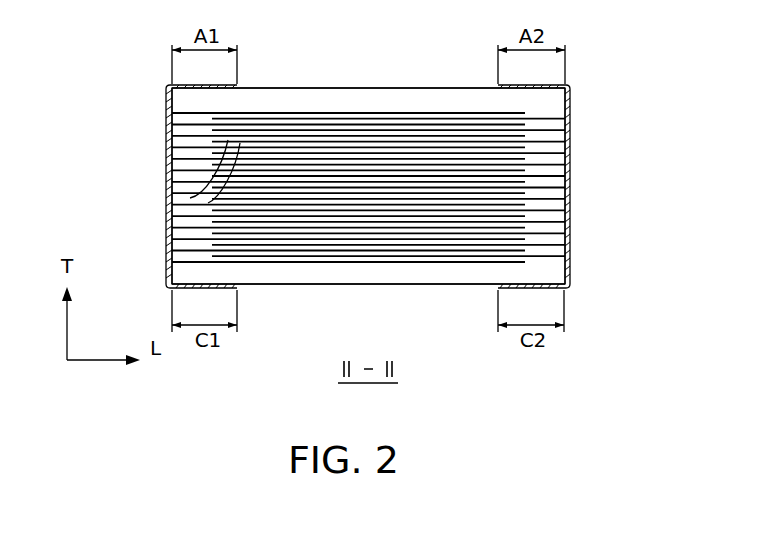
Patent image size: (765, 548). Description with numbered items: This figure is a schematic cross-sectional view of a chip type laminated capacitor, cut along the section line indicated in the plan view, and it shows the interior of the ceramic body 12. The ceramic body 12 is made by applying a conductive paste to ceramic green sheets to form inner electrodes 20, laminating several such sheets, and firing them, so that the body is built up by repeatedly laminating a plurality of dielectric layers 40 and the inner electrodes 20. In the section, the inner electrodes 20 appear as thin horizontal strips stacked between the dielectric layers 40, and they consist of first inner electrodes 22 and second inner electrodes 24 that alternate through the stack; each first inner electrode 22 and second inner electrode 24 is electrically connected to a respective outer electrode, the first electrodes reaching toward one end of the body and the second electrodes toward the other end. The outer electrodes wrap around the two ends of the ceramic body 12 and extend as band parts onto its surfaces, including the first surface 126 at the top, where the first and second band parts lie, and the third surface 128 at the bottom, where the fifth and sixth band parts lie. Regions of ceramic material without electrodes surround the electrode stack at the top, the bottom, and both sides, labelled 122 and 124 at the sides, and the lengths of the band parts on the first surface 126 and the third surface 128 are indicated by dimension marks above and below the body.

The ceramic body 12 is at (399, 80).
The inner electrodes 20 is at (297, 187).
The first inner electrode 22 is at (210, 160).
The second inner electrode 24 is at (210, 160).
The dielectric layers 40 is at (190, 198).
The first side margin portion 122 is at (178, 108).
The second side margin portion 124 is at (558, 111).
The first surface 126 is at (302, 87).
The third surface 128 is at (300, 285).